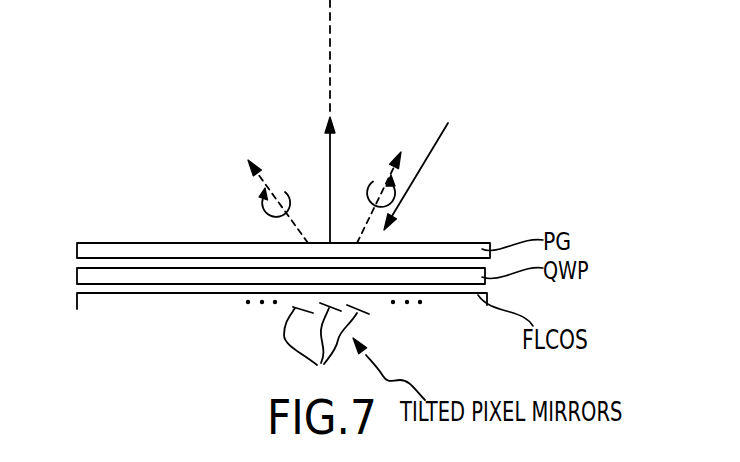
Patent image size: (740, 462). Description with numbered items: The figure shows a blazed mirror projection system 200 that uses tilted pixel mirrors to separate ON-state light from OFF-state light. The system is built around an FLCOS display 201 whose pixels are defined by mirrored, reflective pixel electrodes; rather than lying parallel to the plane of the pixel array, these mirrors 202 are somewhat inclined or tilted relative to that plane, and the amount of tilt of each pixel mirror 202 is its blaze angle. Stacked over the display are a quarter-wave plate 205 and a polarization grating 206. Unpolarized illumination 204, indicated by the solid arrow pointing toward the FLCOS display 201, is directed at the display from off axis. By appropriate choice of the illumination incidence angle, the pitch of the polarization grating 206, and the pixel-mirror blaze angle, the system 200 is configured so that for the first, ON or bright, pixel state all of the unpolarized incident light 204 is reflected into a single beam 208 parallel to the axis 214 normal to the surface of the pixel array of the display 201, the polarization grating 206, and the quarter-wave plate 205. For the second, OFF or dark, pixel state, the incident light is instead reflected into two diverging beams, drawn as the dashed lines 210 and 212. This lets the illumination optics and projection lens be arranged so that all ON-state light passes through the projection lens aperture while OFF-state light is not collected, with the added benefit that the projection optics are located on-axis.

The system 200 is at (121, 132).
The FLCOS display 201 is at (124, 342).
The mirrors 202 is at (326, 349).
The unpolarized illumination 204 is at (432, 155).
The quarter-wave plate 205 is at (455, 273).
The polarization grating 206 is at (446, 251).
The beam 208 is at (332, 142).
The diverging beam 210 is at (266, 186).
The diverging beam 212 is at (380, 200).
The axis 214 is at (330, 53).